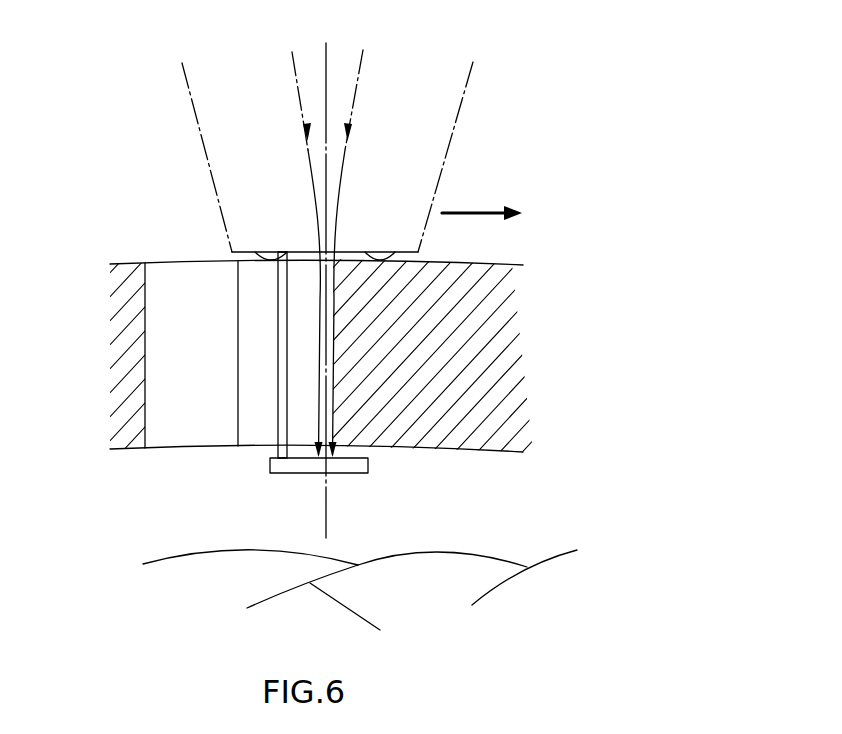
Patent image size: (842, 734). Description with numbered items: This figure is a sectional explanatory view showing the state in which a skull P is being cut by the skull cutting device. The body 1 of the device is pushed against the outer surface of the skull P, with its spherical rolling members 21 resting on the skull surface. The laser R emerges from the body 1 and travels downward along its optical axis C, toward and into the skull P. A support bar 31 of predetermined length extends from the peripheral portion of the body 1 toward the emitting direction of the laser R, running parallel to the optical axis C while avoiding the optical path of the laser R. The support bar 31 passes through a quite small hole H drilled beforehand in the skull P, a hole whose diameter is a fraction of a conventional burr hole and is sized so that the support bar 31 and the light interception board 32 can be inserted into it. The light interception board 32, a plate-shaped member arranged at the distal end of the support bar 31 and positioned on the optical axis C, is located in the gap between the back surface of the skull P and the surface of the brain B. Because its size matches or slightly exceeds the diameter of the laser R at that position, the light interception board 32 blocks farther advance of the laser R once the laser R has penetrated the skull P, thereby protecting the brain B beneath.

The body 1 is at (202, 143).
The spherical rolling member 21 is at (272, 257).
The support bar 31 is at (277, 350).
The light interception board 32 is at (368, 468).
The skull P is at (123, 264).
The hole H is at (177, 275).
The brain B is at (162, 560).
The laser R is at (334, 253).
The optical axis C is at (324, 277).